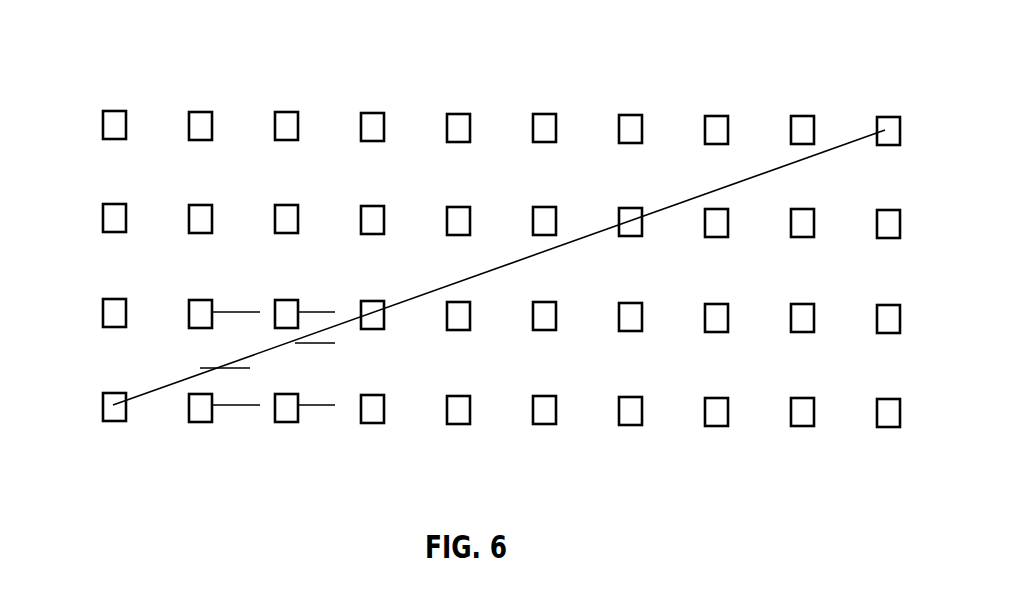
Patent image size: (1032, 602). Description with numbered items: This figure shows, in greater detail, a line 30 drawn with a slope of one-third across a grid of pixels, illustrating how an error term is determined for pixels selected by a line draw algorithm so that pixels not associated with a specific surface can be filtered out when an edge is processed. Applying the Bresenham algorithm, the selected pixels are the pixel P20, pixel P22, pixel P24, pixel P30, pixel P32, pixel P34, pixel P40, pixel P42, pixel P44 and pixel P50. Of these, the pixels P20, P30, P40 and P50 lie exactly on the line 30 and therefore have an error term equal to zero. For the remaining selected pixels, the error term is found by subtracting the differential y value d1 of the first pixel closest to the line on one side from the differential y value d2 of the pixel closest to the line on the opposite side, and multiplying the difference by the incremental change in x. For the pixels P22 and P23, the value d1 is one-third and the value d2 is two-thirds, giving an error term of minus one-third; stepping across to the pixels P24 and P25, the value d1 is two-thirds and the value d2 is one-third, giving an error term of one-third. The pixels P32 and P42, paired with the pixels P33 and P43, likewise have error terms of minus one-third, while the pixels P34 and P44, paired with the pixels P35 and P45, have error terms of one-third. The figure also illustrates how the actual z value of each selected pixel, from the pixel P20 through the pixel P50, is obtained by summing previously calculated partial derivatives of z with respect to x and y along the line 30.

The line 30 is at (175, 382).
The differential y value d1 is at (267, 384).
The differential y value d2 is at (273, 334).
The pixel P20 is at (103, 403).
The pixel P22 is at (189, 403).
The pixel P23 is at (203, 300).
The pixel P24 is at (290, 300).
The pixel P25 is at (287, 422).
The pixel P30 is at (365, 330).
The pixel P32 is at (452, 330).
The pixel P33 is at (447, 212).
The pixel P34 is at (532, 212).
The pixel P35 is at (538, 330).
The pixel P40 is at (617, 212).
The pixel P42 is at (712, 240).
The pixel P43 is at (703, 118).
The pixel P44 is at (788, 118).
The pixel P45 is at (797, 240).
The pixel P50 is at (873, 120).